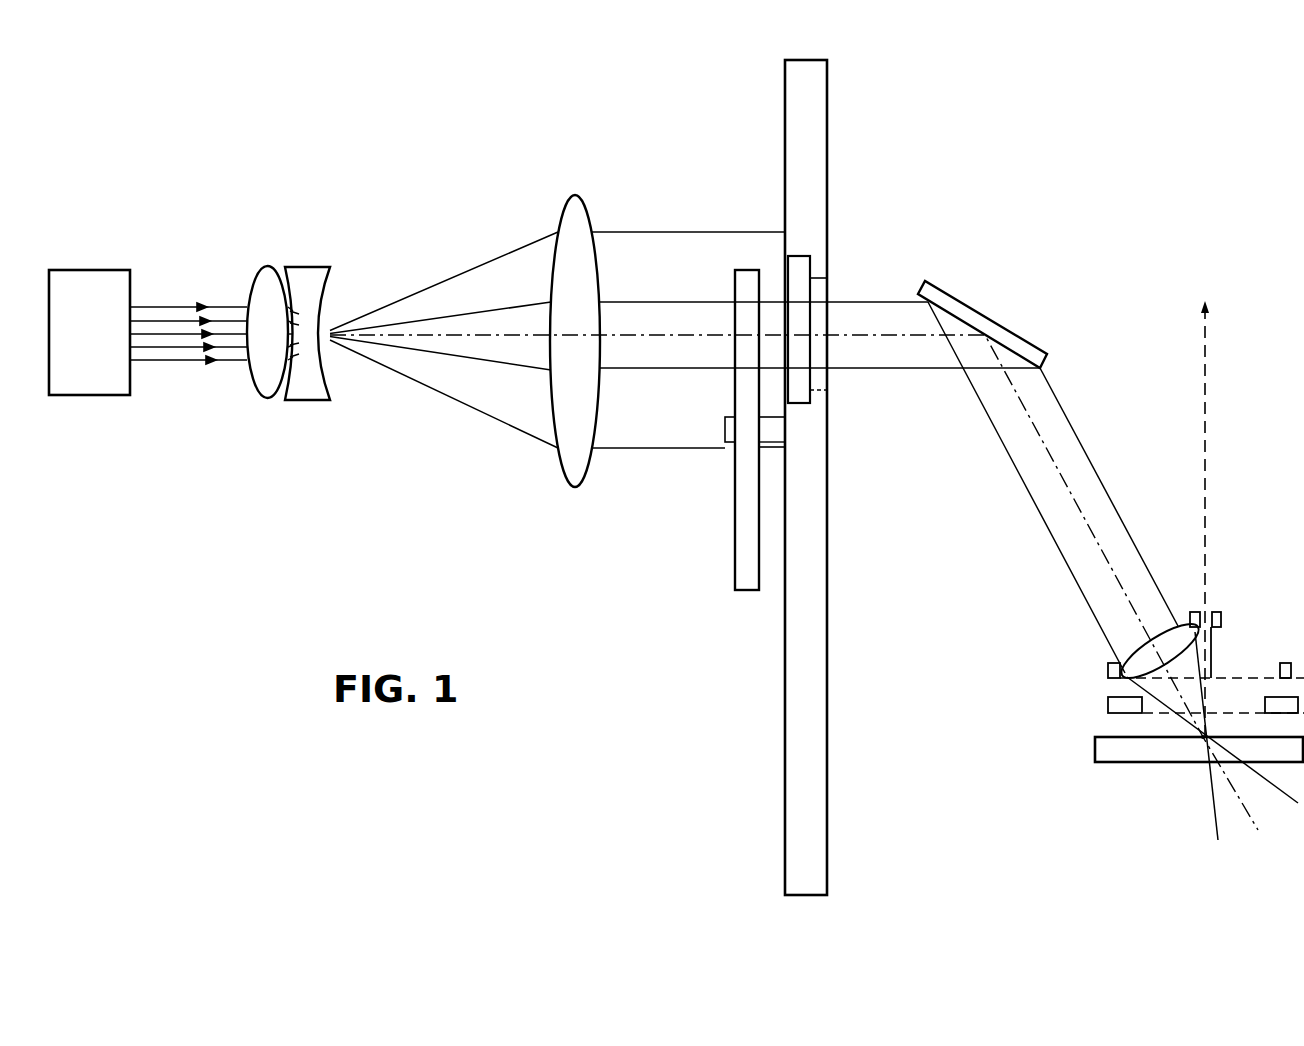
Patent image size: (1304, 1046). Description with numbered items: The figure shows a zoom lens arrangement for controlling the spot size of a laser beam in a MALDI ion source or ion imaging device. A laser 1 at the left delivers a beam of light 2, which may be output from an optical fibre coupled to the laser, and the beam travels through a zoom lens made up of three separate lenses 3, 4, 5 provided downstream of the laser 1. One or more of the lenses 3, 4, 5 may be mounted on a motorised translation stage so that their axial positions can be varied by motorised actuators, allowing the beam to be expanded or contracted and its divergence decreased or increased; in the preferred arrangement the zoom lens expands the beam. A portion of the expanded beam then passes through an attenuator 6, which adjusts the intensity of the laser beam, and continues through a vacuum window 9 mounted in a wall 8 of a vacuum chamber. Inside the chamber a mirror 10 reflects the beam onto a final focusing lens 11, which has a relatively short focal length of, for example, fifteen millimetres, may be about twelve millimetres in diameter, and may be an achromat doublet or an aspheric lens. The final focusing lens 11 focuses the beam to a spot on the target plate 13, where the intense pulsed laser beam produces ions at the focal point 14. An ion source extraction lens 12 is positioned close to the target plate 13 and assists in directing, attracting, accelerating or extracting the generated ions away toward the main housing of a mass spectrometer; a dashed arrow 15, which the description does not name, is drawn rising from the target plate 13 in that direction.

The laser 1 is at (80, 350).
The beam of light 2 is at (177, 302).
The lens 3 is at (251, 380).
The lens 4 is at (330, 380).
The lens 5 is at (561, 470).
The attenuator 6 is at (735, 543).
The wall of the vacuum chamber 8 is at (829, 206).
The vacuum window 9 is at (811, 293).
The mirror 10 is at (1002, 315).
The final focusing lens 11 is at (1147, 660).
The ion source extraction lens 12 is at (1105, 712).
The target plate 13 is at (1095, 761).
The focal point 14 is at (1200, 741).
The normal axis 15 is at (1205, 502).